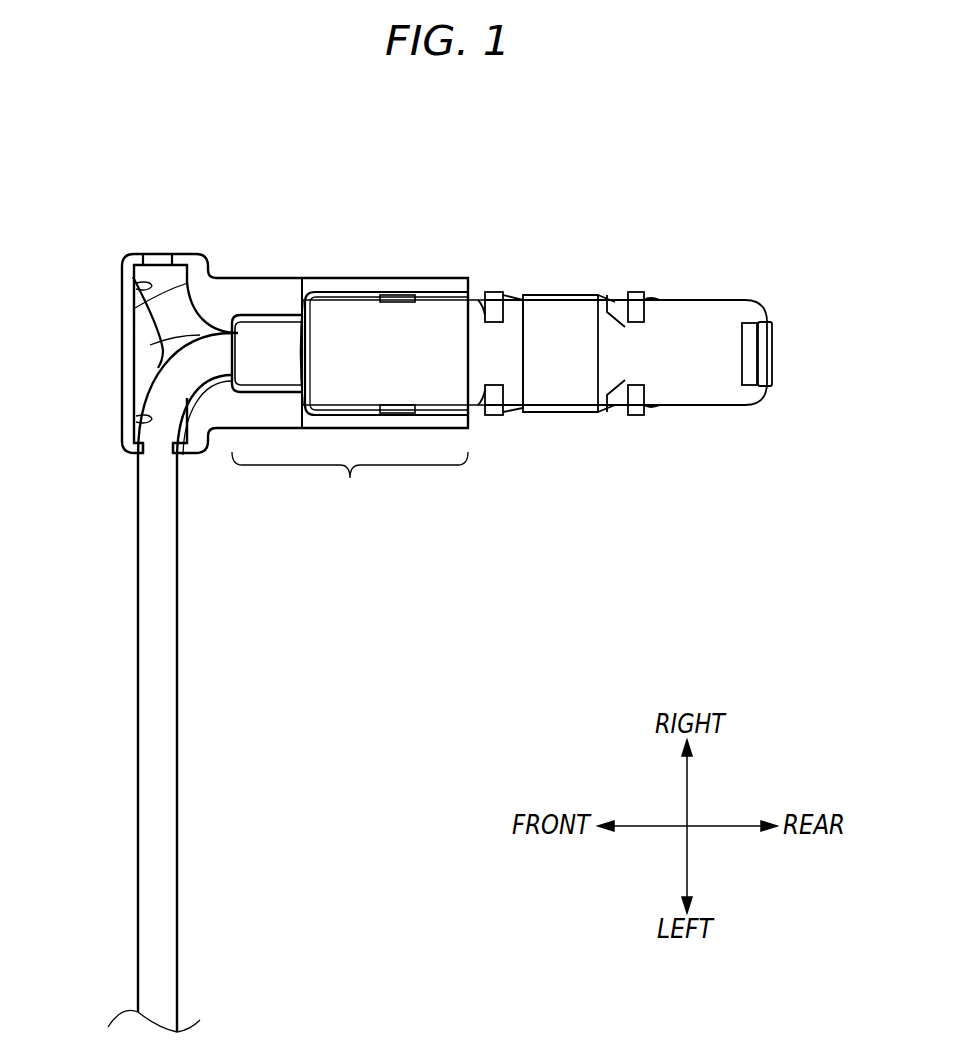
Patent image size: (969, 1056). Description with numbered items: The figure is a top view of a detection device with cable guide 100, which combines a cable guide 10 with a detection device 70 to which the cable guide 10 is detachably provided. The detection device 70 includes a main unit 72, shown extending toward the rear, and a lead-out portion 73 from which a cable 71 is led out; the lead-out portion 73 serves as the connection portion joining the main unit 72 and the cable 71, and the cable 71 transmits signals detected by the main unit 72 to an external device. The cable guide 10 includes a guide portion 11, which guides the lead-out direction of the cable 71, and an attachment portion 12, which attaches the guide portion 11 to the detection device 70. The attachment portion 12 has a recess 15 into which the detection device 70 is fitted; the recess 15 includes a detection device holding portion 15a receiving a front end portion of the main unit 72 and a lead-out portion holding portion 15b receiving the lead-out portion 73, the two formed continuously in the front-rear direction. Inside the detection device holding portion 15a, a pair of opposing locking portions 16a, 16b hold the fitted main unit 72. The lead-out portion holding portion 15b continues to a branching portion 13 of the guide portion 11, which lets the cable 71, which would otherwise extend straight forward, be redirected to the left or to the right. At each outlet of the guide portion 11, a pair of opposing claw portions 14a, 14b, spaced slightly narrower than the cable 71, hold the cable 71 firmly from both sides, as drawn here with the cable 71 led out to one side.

The detection device with cable guide 100 is at (550, 166).
The cable guide 10 is at (238, 268).
The guide portion 11 is at (150, 294).
The attachment portion 12 is at (350, 477).
The branching portion 13 is at (128, 340).
The claw portion 14a is at (150, 254).
The claw portion 14b is at (166, 254).
The recess 15 is at (334, 305).
The detection device holding portion 15a is at (453, 293).
The lead-out portion holding portion 15b is at (289, 316).
The locking portion 16a is at (397, 405).
The locking portion 16b is at (428, 327).
The detection device 70 is at (710, 294).
The cable 71 is at (166, 830).
The main unit 72 is at (430, 322).
The lead-out portion 73 is at (259, 343).